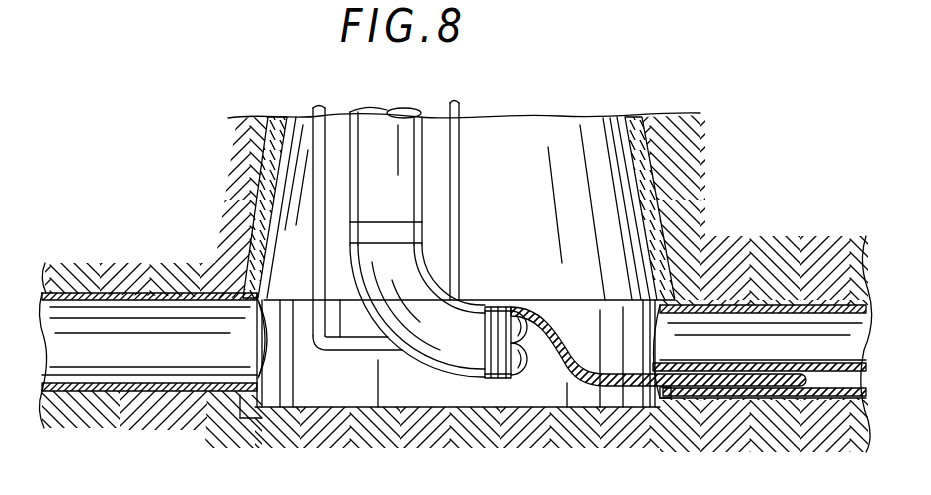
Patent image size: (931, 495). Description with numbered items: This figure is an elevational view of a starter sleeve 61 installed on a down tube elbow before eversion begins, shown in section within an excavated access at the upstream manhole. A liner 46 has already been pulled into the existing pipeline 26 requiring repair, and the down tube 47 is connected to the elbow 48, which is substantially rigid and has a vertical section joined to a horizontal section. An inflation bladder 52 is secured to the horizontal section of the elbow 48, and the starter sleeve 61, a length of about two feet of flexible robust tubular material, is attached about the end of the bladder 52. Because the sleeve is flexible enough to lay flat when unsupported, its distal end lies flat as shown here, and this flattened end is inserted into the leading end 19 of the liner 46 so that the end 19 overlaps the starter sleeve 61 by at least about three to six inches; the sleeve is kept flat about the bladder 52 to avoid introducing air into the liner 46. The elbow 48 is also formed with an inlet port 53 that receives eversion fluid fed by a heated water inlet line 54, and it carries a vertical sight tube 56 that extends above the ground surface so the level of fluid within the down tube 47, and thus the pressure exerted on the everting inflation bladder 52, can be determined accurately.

The leading end 19 is at (724, 352).
The existing pipeline 26 is at (800, 306).
The liner 46 is at (815, 392).
The down tube 47 is at (403, 152).
The elbow 48 is at (423, 328).
The inflation bladder 52 is at (531, 380).
The inlet port 53 is at (351, 349).
The heated water inlet line 54 is at (316, 126).
The vertical sight tube 56 is at (460, 133).
The starter sleeve 61 is at (543, 310).